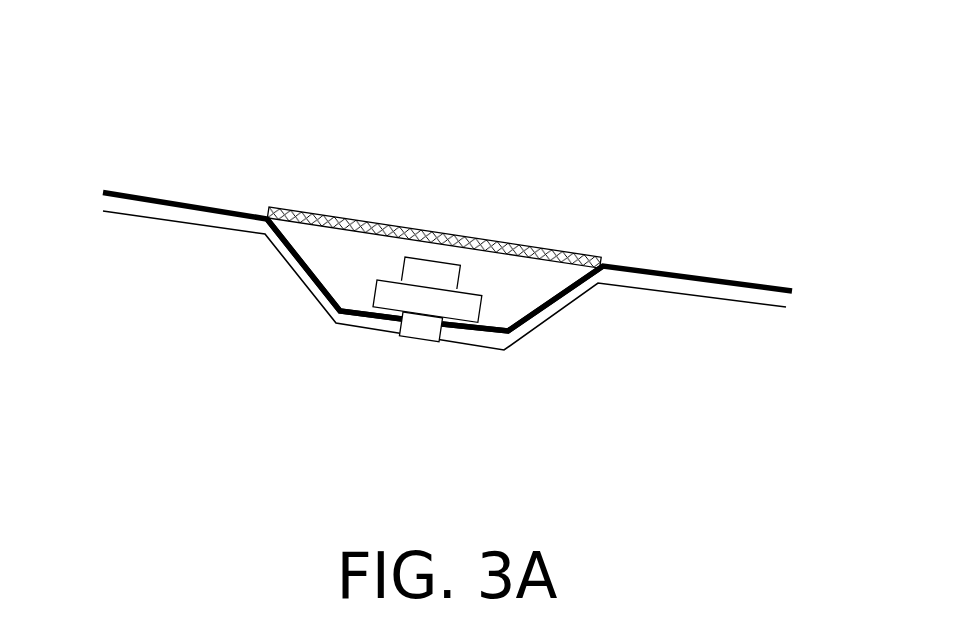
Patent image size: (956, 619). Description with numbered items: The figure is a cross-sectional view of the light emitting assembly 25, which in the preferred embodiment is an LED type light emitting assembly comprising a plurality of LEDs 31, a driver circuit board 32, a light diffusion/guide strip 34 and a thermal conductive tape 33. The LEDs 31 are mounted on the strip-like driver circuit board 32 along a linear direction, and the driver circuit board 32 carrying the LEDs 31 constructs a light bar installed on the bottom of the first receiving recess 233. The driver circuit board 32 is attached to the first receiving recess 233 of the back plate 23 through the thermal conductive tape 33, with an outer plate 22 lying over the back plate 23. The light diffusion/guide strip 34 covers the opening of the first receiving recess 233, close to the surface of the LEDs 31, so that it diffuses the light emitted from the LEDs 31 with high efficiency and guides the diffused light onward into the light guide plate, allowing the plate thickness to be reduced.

The light emitting assembly 25 is at (598, 118).
The outer housing plate 22 is at (168, 208).
The back plate 23 is at (247, 234).
The first receiving recess 233 is at (530, 292).
The light diffusion/guide strip 34 is at (360, 218).
The LEDs 31 is at (460, 262).
The driver circuit board 32 is at (395, 298).
The thermal conductive tape 33 is at (422, 333).